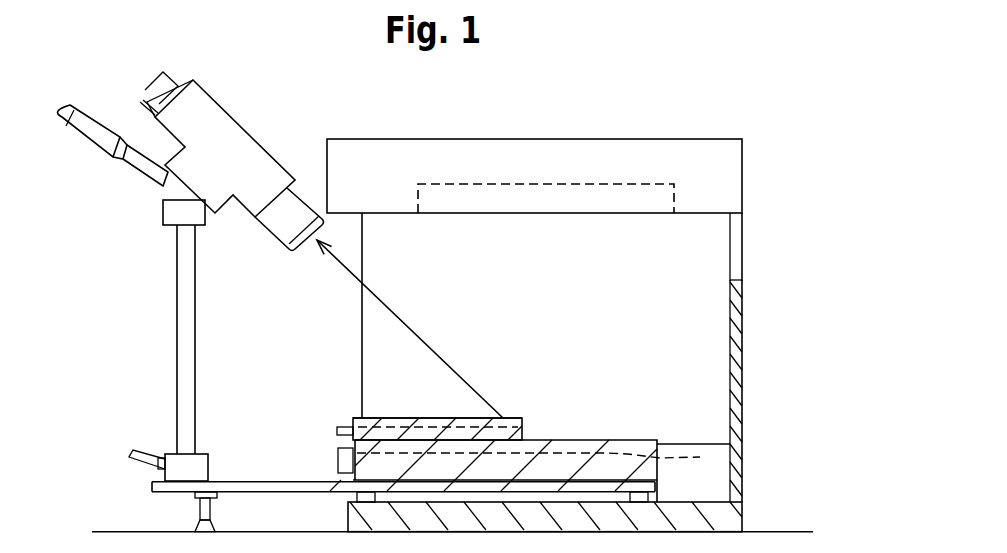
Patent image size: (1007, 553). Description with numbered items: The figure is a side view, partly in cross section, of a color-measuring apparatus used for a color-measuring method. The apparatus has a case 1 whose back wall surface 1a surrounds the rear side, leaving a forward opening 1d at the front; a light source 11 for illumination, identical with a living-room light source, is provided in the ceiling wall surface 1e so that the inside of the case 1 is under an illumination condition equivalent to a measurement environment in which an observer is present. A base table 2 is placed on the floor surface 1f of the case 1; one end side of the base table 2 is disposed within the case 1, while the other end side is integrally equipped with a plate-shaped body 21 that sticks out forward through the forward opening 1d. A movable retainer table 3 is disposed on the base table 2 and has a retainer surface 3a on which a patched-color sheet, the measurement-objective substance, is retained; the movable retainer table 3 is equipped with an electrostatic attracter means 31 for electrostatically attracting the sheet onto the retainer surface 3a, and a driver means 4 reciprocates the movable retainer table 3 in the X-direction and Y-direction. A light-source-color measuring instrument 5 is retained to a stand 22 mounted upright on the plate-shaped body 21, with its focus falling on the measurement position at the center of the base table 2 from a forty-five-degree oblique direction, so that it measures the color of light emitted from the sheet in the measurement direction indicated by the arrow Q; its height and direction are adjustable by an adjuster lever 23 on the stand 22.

The case 1 is at (724, 138).
The light source for illumination 11 is at (568, 177).
The ceiling wall surface 1e is at (692, 213).
The back wall surface 1a is at (743, 332).
The floor surface 1f is at (727, 517).
The forward opening 1d is at (352, 342).
The base table 2 is at (657, 443).
The movable retainer table 3 is at (393, 418).
The retainer surface 3a is at (522, 418).
The electrostatic attracter means 31 is at (526, 430).
The driver means 4 is at (700, 457).
The light-source-color measuring instrument 5 is at (213, 98).
The plate-shaped body 21 is at (273, 483).
The stand 22 is at (185, 267).
The adjuster lever 23 is at (86, 118).
The measurement direction Q is at (402, 318).